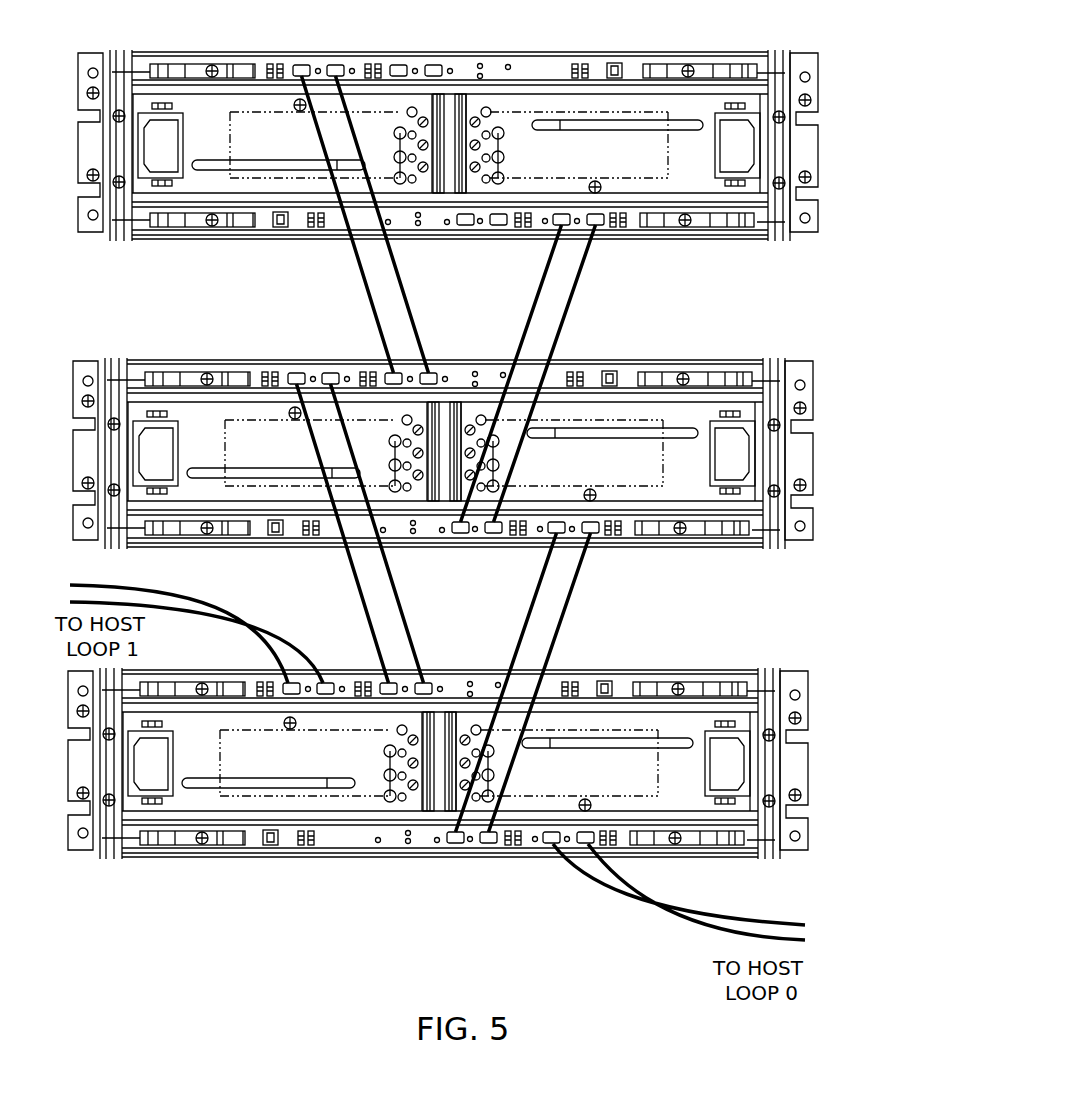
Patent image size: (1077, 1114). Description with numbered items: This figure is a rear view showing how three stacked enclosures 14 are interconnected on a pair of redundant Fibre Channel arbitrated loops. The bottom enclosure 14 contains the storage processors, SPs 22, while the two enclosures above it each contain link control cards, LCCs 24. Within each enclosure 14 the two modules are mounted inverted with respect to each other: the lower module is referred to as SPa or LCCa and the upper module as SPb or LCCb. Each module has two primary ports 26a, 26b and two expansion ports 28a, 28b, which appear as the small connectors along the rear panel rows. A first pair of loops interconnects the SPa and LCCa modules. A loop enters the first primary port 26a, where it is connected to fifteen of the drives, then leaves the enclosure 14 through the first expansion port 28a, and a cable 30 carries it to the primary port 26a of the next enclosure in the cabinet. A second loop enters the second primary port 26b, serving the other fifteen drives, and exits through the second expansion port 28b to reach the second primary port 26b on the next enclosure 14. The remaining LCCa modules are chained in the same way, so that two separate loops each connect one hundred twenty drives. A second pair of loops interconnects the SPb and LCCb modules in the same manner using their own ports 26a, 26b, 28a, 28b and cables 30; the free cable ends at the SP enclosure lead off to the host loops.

The enclosure 14 is at (80, 231).
The SP 22 is at (745, 828).
The LCC 24 is at (752, 210).
The primary port 26a is at (300, 64).
The second primary port 26b is at (337, 64).
The expansion port 28a is at (396, 64).
The second expansion port 28b is at (436, 64).
The cable 30 is at (556, 632).
The lower LCC LCCa is at (642, 230).
The upper LCC LCCb is at (643, 53).
The lower SP SPa is at (640, 853).
The upper SP SPb is at (638, 670).